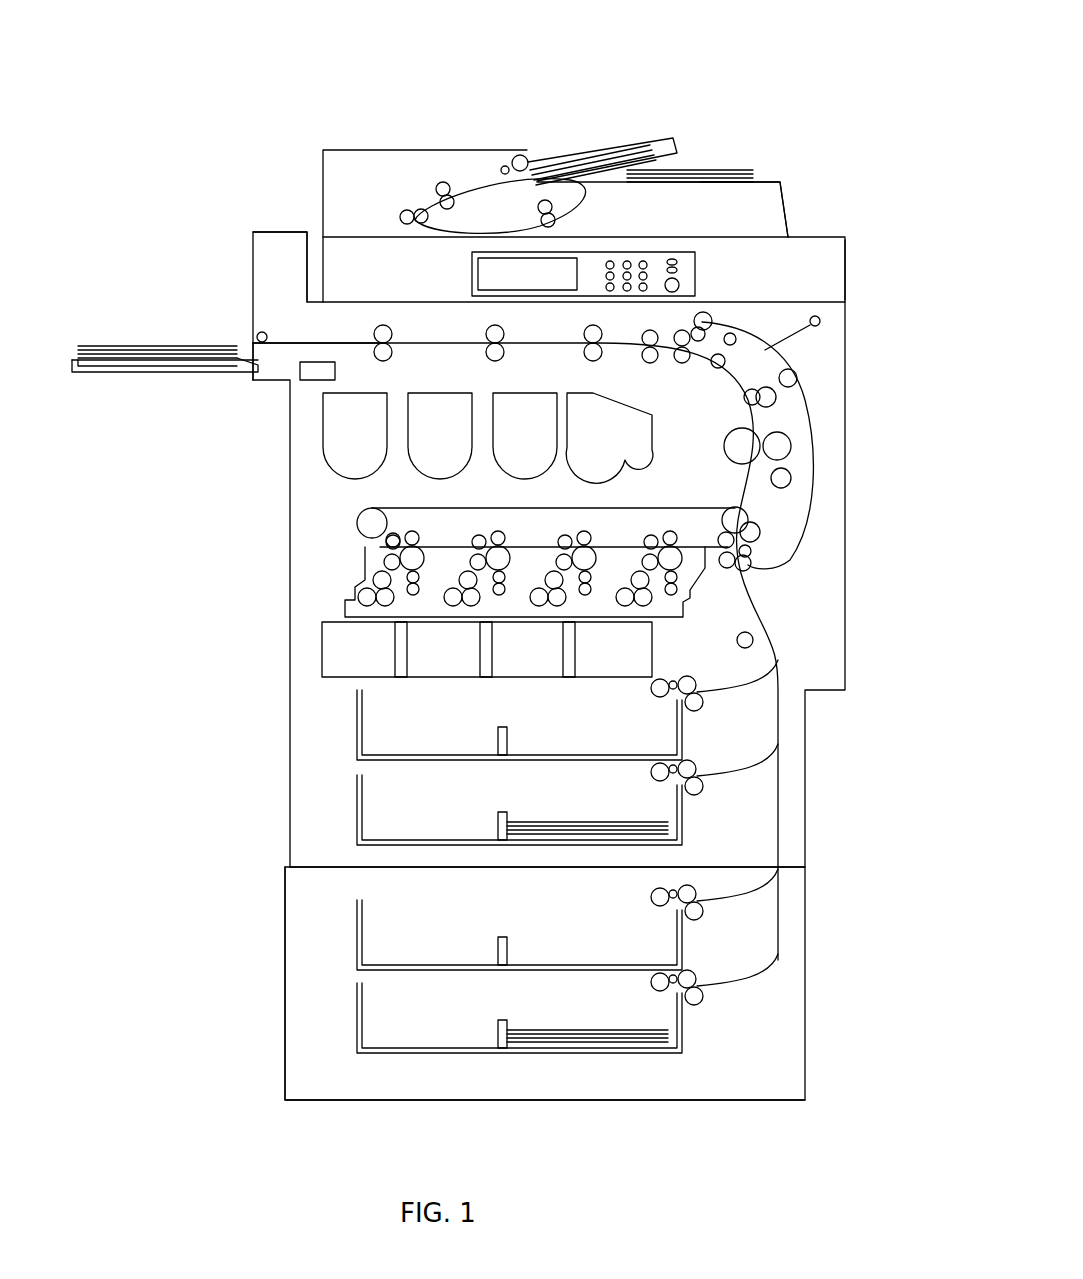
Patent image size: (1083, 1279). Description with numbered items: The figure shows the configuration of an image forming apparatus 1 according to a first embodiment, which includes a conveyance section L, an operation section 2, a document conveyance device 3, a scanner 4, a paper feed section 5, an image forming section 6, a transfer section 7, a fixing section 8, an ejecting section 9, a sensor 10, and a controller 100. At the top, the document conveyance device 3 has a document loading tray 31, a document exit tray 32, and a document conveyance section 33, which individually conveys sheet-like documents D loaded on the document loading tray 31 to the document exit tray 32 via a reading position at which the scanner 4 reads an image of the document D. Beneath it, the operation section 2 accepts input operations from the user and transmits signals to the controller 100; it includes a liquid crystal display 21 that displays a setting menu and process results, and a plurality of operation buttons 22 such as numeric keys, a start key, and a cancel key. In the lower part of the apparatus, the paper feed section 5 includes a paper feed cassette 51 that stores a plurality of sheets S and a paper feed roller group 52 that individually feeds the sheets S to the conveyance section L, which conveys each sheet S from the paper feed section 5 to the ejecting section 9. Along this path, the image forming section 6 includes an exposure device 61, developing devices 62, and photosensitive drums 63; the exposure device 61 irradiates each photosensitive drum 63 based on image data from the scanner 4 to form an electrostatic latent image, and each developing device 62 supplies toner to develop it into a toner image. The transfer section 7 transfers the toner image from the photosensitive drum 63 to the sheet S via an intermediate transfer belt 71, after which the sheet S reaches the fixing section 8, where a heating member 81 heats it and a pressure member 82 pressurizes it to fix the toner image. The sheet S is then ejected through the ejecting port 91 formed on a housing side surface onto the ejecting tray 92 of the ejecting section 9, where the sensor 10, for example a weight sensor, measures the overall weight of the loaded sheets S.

The image forming apparatus 1 is at (810, 76).
The operation section 2 is at (605, 259).
The document conveyance device 3 is at (568, 128).
The scanner 4 is at (850, 273).
The paper feed section 5 is at (529, 888).
The image forming section 6 is at (470, 594).
The transfer section 7 is at (506, 482).
The fixing section 8 is at (756, 450).
The ejecting section 9 is at (211, 253).
The sensor 10 is at (176, 373).
The liquid crystal display 21 is at (528, 276).
The operation buttons 22 is at (684, 250).
The document loading tray 31 is at (680, 150).
The document exit tray 32 is at (773, 180).
The document conveyance section 33 is at (474, 170).
The paper feed cassette 51 is at (356, 708).
The paper feed roller group 52 is at (661, 705).
The exposure device 61 is at (333, 636).
The developing device 62 is at (380, 565).
The photosensitive drum 63 is at (419, 558).
The intermediate transfer belt 71 is at (558, 512).
The heating member 81 is at (736, 448).
The pressure member 82 is at (791, 436).
The ejecting port 91 is at (250, 331).
The ejecting tray 92 is at (72, 360).
The controller 100 is at (302, 381).
The sheet S is at (106, 347).
The document D is at (603, 145).
The conveyance section L is at (437, 341).